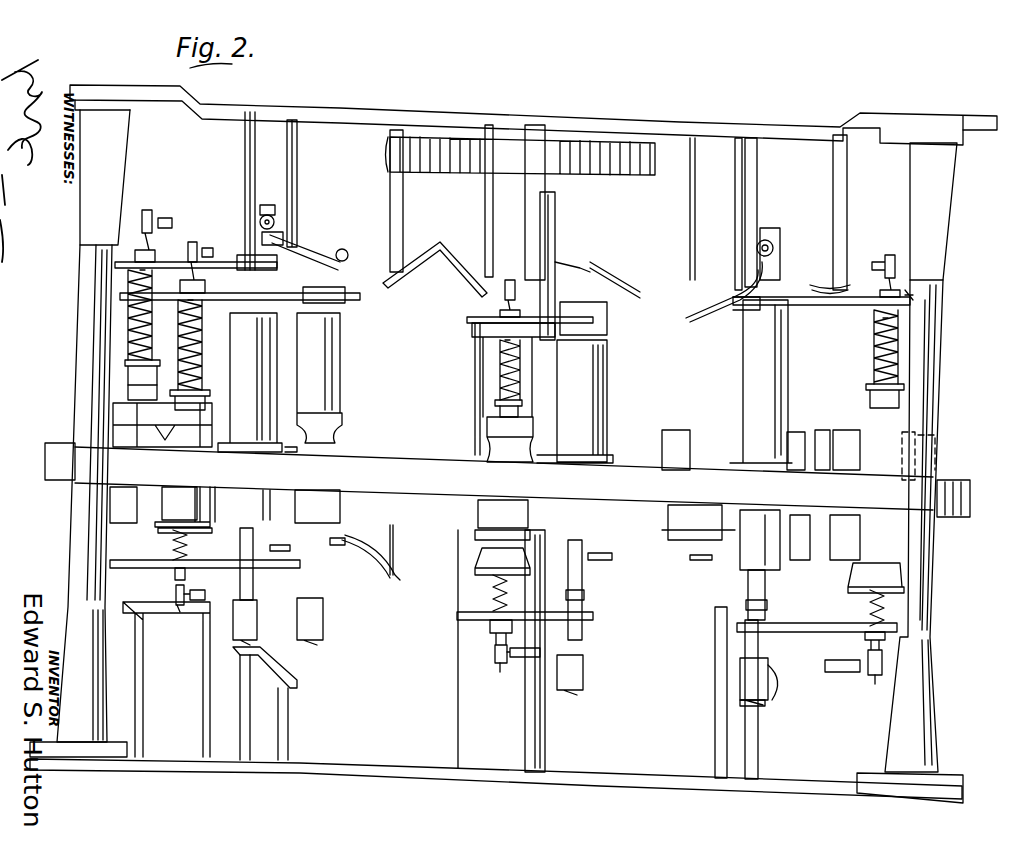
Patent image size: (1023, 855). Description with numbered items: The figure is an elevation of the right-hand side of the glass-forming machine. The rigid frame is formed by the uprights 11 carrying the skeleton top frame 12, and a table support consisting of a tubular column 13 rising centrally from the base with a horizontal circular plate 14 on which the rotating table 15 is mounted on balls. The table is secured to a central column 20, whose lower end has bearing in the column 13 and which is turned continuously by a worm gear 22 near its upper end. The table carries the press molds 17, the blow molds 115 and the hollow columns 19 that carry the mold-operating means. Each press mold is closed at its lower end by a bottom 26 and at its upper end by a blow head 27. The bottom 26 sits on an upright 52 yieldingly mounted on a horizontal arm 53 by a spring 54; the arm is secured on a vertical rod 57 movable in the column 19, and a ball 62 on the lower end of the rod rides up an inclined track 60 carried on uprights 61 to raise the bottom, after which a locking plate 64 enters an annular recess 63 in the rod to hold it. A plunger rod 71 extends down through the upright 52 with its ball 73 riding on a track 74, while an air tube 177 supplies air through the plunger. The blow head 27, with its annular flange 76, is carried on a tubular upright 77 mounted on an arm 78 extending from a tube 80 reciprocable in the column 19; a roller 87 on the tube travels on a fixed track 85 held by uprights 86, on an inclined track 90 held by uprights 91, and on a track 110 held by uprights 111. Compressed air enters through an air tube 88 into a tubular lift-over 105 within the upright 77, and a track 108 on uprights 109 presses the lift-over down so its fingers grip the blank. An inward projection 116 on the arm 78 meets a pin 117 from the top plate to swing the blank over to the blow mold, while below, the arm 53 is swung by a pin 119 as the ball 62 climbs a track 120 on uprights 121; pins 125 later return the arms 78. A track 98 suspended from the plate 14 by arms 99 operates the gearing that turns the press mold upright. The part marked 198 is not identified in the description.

The uprights 11 is at (76, 539).
The top frame 12 is at (812, 122).
The tubular column 13 is at (501, 651).
The horizontal circular top frame or plate 14 is at (504, 478).
The table 15 is at (45, 455).
The press mold 17 is at (790, 560).
The column 19 is at (505, 381).
The column 20 is at (483, 386).
The worm gear 22 is at (430, 140).
The bottom 26 is at (689, 570).
The blow head 27 is at (948, 400).
The upright 52 is at (173, 532).
The horizontal arm 53 is at (805, 648).
The spring 54 is at (865, 592).
The vertical rod 57 is at (300, 596).
The inclined track 60 is at (290, 667).
The uprights 61 is at (242, 698).
The ball 62 is at (280, 636).
The annular recess 63 is at (584, 595).
The locking plate 64 is at (630, 554).
The plunger rod 71 is at (176, 582).
The ball 73 is at (495, 665).
The track 74 is at (166, 679).
The annular flange 76 is at (125, 362).
The tubular upright 77 is at (126, 326).
The arm 78 is at (165, 262).
The tube 80 is at (268, 208).
The fixed track 85 is at (344, 263).
The uprights 86 is at (290, 159).
The roller 87 is at (274, 219).
The air tube 88 is at (175, 212).
The inclined track 90 is at (428, 268).
The uprights 91 is at (403, 192).
The track 98 is at (372, 585).
The arms 99 is at (395, 540).
The tubular lift-over 105 is at (933, 283).
The track 108 is at (832, 305).
The uprights 109 is at (555, 218).
The track 110 is at (722, 297).
The uprights 111 is at (757, 187).
The blow mold 115 is at (110, 502).
The inward projection 116 is at (740, 310).
The pin 117 is at (735, 200).
The pin 119 is at (715, 670).
The track 120 is at (780, 688).
The uprights 121 is at (758, 754).
The pins 125 is at (245, 165).
The air tube 177 is at (842, 672).
The arm 198 is at (594, 281).